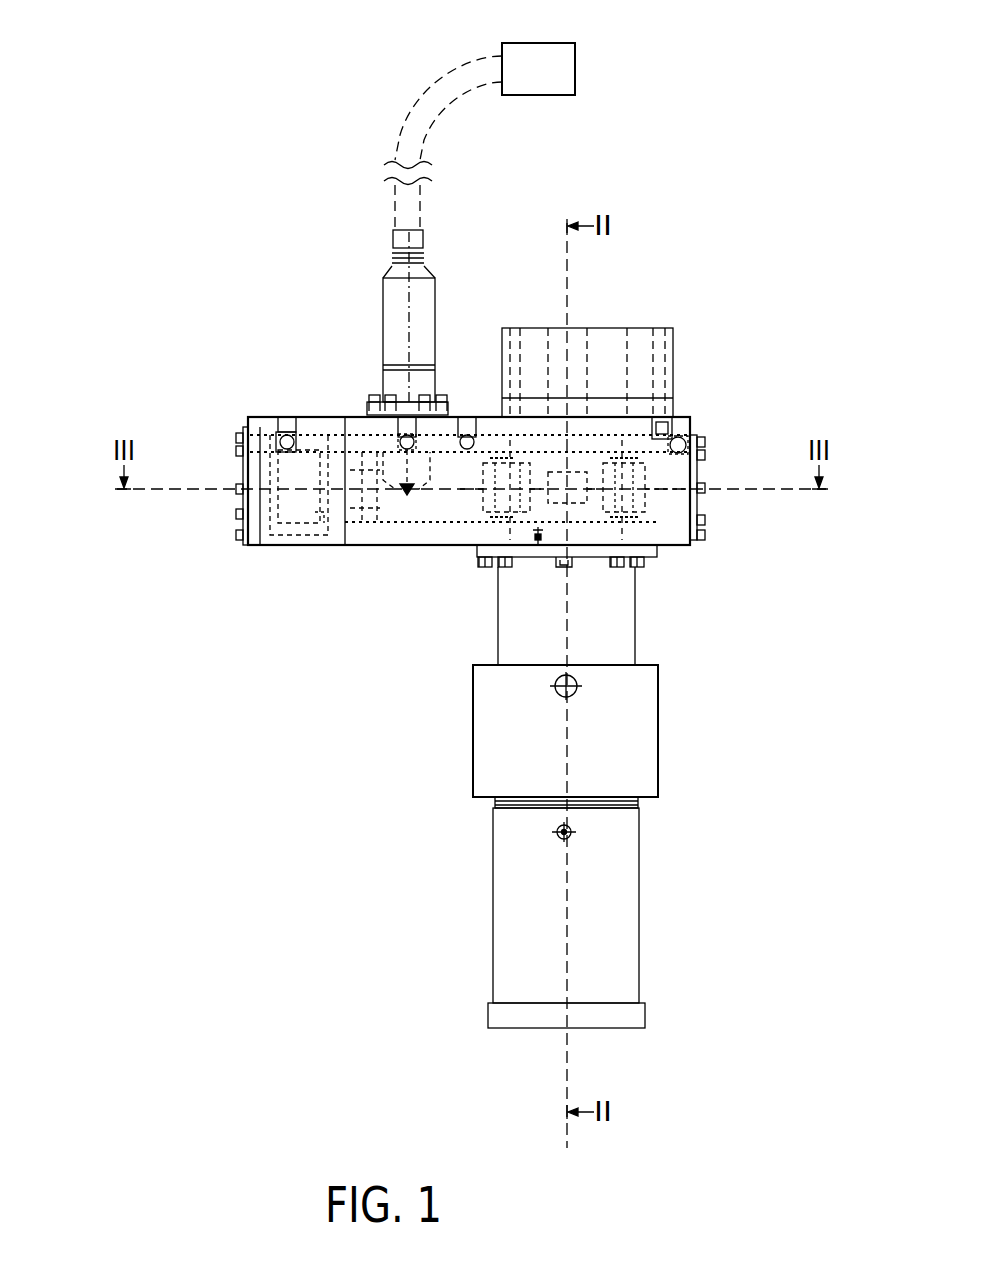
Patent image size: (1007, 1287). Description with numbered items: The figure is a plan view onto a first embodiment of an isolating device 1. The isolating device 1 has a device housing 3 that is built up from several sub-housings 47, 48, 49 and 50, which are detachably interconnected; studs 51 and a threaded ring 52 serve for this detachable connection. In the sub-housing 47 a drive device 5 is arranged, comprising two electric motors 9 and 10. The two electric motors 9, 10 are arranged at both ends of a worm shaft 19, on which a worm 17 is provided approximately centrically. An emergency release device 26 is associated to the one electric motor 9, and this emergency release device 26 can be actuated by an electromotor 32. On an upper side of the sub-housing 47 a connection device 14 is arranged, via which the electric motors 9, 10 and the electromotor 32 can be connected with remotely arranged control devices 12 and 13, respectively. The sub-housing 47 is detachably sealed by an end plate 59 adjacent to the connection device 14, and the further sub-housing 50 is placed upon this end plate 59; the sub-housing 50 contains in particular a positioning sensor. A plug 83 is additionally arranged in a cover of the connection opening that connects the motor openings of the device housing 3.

The isolating device 1 is at (707, 147).
The device housing 3 is at (645, 648).
The drive device 5 is at (506, 484).
The electric motor 9 is at (500, 415).
The electric motor 10 is at (645, 497).
The control device 12 is at (582, 69).
The control device 13 is at (575, 73).
The connection device 14 is at (400, 357).
The worm 17 is at (660, 418).
The worm shaft 19 is at (597, 568).
The emergency release device 26 is at (398, 540).
The electromotor 32 is at (297, 527).
The sub-housing 47 is at (707, 458).
The sub-housing 48 is at (498, 628).
The sub-housing 49 is at (639, 888).
The sub-housing 50 is at (636, 328).
The studs 51 is at (487, 568).
The threaded ring 52 is at (658, 735).
The end plate 59 is at (612, 412).
The plug 83 is at (555, 687).